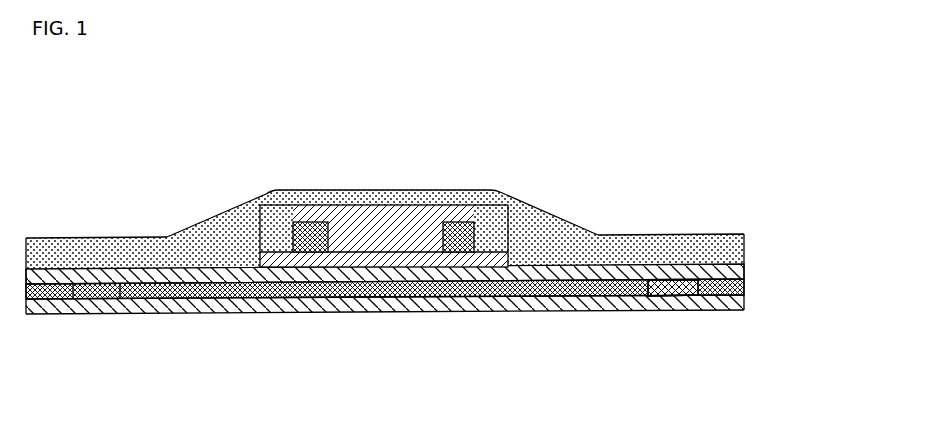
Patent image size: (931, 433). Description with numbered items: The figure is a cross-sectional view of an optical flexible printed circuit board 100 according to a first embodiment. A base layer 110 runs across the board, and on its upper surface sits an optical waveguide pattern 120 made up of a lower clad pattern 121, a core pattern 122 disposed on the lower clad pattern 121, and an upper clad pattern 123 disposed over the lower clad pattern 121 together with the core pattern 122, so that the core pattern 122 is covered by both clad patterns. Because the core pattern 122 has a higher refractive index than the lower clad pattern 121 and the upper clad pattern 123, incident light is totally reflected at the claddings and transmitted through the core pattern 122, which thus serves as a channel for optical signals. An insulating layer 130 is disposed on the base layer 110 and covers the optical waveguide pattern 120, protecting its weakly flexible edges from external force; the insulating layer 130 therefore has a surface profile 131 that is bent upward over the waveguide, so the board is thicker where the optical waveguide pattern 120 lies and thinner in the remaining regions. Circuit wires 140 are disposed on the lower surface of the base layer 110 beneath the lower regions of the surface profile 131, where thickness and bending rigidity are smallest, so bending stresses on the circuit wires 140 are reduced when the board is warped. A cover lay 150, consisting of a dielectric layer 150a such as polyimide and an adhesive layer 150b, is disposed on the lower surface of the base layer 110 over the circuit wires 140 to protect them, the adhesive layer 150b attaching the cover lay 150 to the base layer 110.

The optical flexible printed circuit board 100 is at (75, 79).
The base layer 110 is at (744, 270).
The optical waveguide pattern 120 is at (363, 175).
The lower clad pattern 121 is at (280, 250).
The core pattern 122 is at (400, 128).
The upper clad pattern 123 is at (374, 220).
The insulating layer 130 is at (430, 239).
The surface profile 131 is at (530, 202).
The circuit wires 140 is at (675, 312).
The cover lay 150 is at (385, 351).
The dielectric layer 150a is at (311, 297).
The adhesive layer 150b is at (548, 335).